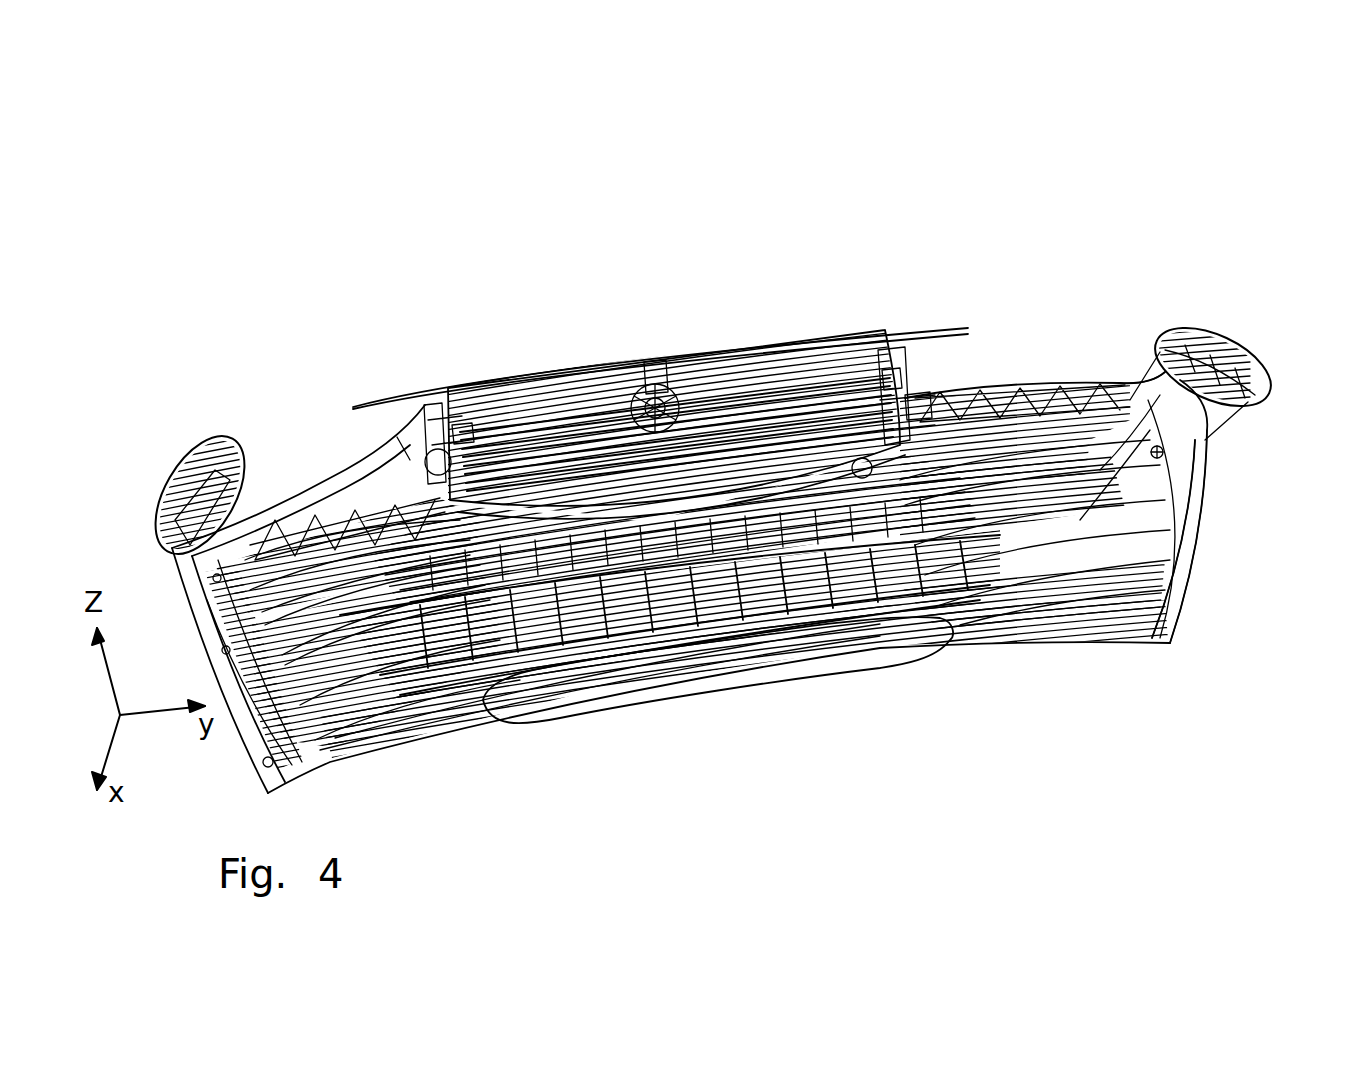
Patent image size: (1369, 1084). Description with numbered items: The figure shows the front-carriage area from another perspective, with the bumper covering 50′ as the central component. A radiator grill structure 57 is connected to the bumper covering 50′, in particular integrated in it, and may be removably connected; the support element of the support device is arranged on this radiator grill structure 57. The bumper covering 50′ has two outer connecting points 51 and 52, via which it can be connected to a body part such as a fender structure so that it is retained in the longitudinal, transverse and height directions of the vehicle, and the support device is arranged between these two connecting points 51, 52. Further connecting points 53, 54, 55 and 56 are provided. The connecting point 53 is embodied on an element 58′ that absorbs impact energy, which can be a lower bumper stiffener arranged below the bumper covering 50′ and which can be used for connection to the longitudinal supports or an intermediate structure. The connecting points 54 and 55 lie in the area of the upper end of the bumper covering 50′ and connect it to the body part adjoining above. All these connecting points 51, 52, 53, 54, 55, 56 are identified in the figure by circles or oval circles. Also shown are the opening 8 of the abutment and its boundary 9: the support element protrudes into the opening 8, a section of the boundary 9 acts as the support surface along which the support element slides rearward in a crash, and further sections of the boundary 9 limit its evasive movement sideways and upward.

The opening 8 is at (436, 442).
The boundary of the opening 9 is at (470, 400).
The bumper covering 50′ is at (1145, 398).
The connecting point 51 is at (1203, 372).
The connecting point 52 is at (210, 520).
The connecting point 53 is at (650, 673).
The connecting point 54 is at (447, 440).
The connecting point 55 is at (902, 430).
The connecting point 56 is at (678, 375).
The radiator grill structure 57 is at (790, 425).
The element which absorbs impact energy 58′ is at (793, 623).